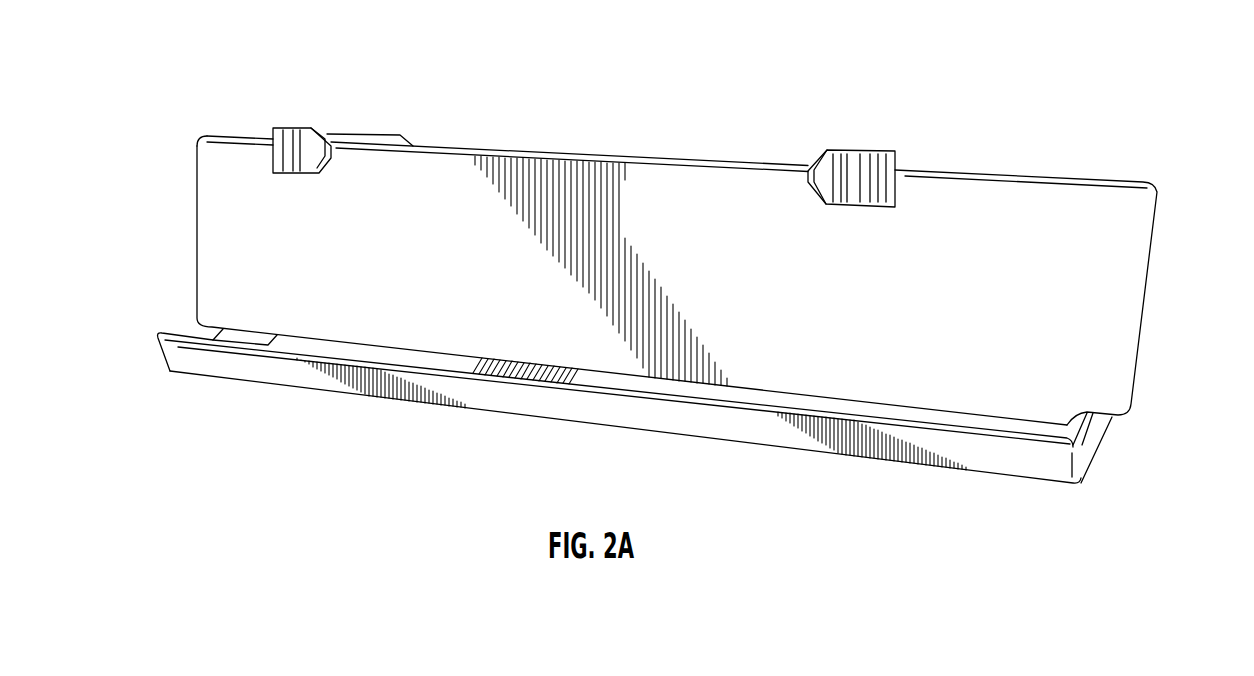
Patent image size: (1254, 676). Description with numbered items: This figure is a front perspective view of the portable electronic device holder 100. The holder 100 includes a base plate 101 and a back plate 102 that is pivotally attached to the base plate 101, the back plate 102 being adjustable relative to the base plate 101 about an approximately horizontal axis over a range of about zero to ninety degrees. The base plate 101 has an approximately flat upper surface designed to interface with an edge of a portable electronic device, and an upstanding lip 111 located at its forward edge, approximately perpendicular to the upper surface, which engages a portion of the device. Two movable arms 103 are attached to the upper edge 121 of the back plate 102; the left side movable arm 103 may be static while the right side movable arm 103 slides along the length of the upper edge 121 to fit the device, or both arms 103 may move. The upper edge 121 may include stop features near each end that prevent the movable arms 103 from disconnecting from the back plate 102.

The portable electronic device holder 100 is at (202, 82).
The base plate 101 is at (403, 383).
The back plate 102 is at (820, 293).
The movable arm 103 is at (293, 140).
The upstanding lip 111 is at (715, 427).
The upper edge 121 is at (1140, 198).